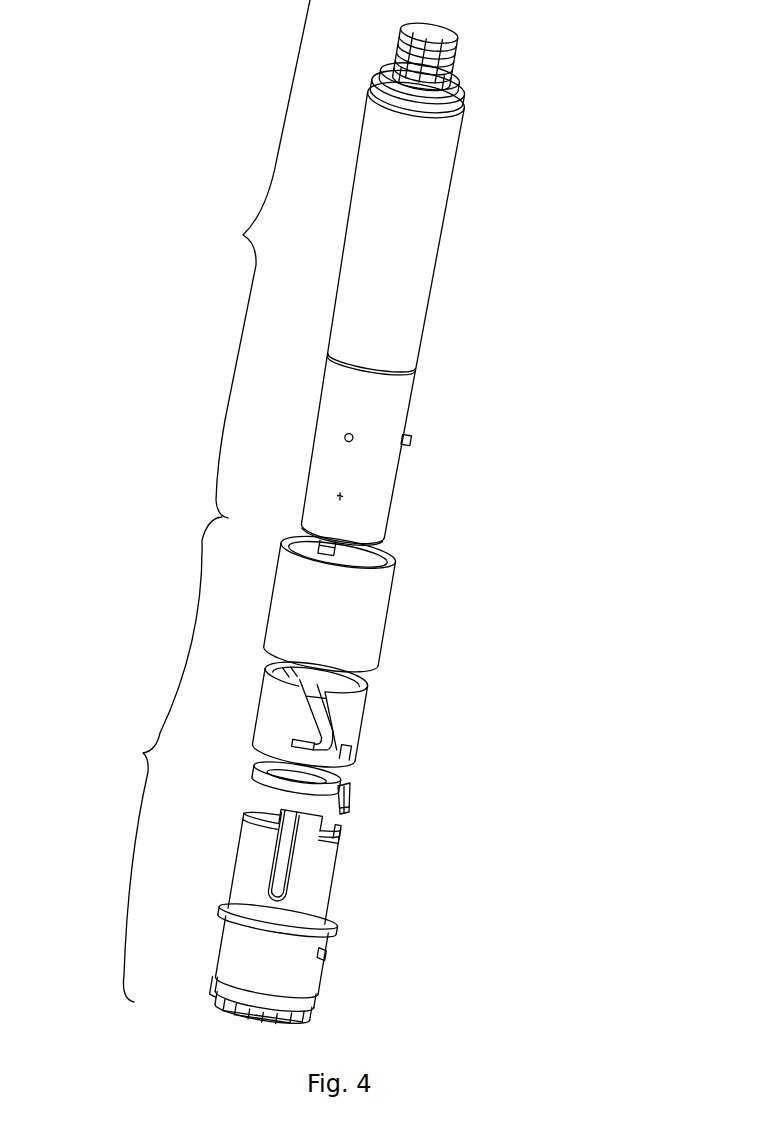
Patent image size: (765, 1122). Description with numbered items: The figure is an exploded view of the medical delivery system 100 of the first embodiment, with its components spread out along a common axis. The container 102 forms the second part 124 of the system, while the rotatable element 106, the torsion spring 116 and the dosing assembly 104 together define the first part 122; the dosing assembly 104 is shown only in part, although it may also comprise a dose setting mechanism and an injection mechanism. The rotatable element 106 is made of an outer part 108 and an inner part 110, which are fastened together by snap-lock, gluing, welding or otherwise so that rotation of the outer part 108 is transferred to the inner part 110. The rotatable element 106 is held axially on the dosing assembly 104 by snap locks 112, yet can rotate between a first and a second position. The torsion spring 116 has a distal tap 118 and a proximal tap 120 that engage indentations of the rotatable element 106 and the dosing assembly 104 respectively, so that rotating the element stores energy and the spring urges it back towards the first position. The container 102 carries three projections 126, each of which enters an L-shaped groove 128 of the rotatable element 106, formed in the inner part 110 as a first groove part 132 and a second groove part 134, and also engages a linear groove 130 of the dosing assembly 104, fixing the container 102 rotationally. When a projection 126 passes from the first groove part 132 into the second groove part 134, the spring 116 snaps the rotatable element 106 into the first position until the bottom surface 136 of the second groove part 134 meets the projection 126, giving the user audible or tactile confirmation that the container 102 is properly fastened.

The medical delivery system 100 is at (131, 342).
The container 102 is at (407, 187).
The dosing assembly 104 is at (290, 978).
The rotatable element 106 is at (334, 621).
The outer part 108 is at (372, 621).
The inner part 110 is at (370, 690).
The snap locks 112 is at (337, 839).
The torsion spring 116 is at (310, 838).
The distal tap 118 is at (347, 782).
The proximal tap 120 is at (347, 810).
The first part 122 is at (157, 759).
The second part 124 is at (247, 259).
The projections 126 is at (356, 432).
The L-shaped grooves 128 is at (383, 708).
The linear grooves 130 is at (283, 871).
The first groove part 132 is at (345, 703).
The second groove part 134 is at (312, 742).
The bottom surface 136 is at (308, 745).